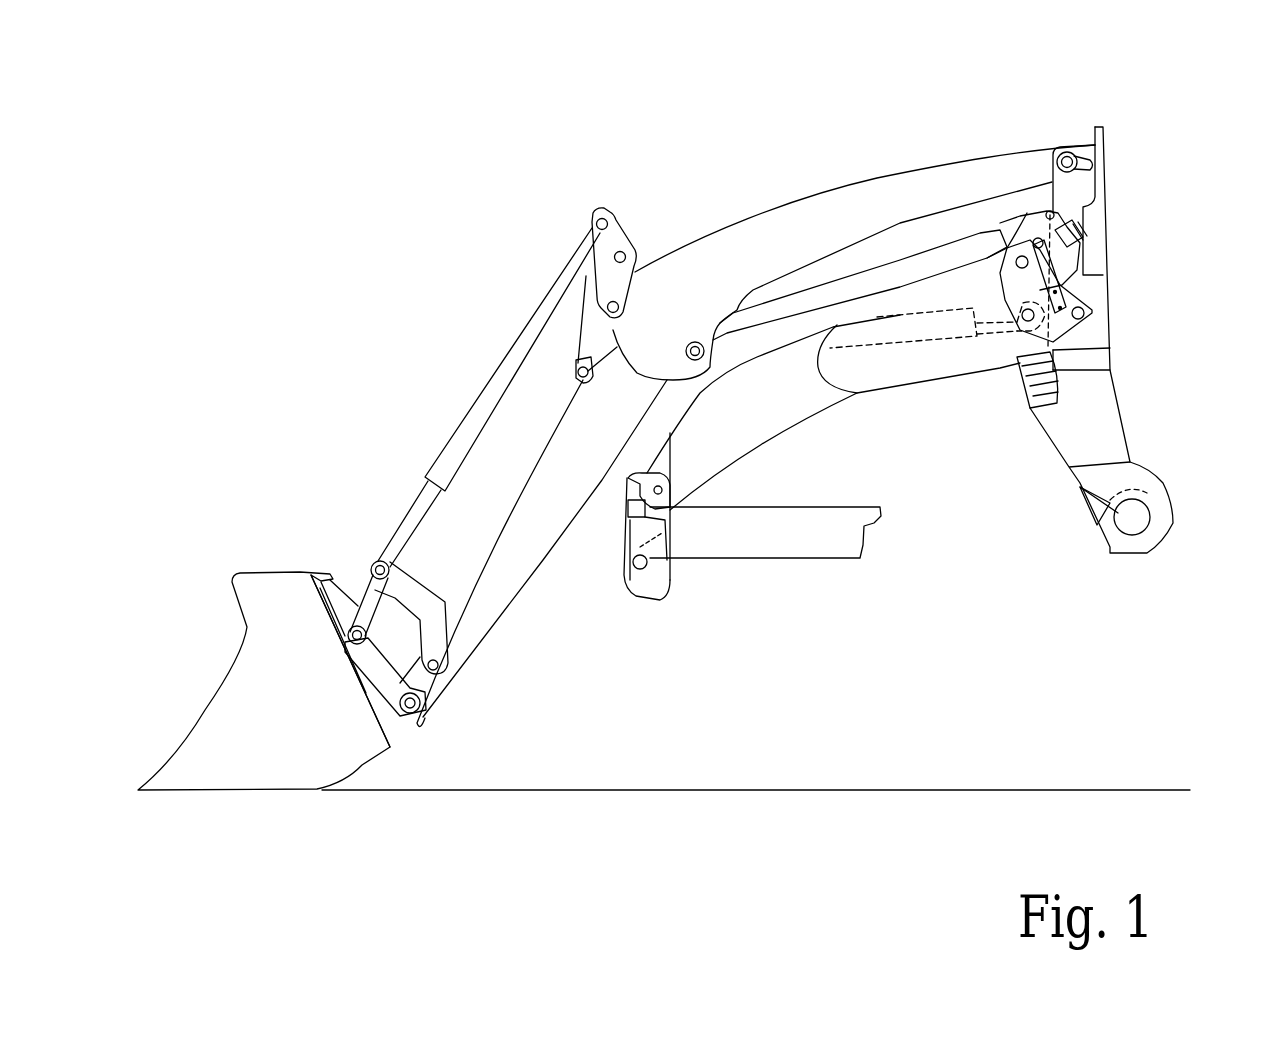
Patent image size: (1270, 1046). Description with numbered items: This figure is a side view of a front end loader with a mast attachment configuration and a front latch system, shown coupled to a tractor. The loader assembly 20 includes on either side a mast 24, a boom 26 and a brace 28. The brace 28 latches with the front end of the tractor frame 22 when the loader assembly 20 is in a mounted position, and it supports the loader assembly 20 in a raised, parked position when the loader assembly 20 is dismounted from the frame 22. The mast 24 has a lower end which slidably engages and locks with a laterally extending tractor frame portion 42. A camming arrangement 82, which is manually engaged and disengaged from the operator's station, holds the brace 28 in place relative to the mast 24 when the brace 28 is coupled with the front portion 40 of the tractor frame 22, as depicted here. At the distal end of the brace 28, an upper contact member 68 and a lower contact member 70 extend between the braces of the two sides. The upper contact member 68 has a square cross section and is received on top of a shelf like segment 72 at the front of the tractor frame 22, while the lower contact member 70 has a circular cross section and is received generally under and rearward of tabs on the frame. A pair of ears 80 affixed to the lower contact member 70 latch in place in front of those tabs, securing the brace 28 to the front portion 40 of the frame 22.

The loader assembly 20 is at (349, 332).
The tractor frame 22 is at (993, 608).
The mast 24 is at (1107, 408).
The boom 26 is at (812, 215).
The brace 28 is at (940, 363).
The front portion 40 is at (880, 550).
The laterally extending tractor frame portion 42 is at (1153, 553).
The upper contact member 68 is at (627, 507).
The lower contact member 70 is at (648, 563).
The shelf like segment 72 is at (700, 510).
The ears 80 is at (670, 592).
The camming arrangement 82 is at (1120, 219).